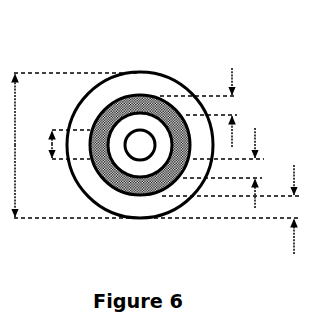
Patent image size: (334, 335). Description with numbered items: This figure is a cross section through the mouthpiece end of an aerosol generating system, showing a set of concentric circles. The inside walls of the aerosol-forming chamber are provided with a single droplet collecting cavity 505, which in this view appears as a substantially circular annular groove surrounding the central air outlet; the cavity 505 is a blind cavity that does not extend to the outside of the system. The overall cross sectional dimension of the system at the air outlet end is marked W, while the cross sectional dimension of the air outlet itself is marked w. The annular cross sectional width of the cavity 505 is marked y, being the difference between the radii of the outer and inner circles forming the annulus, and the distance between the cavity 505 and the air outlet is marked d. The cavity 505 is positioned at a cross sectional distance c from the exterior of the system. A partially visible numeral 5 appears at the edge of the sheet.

The droplet collecting cavity 505 is at (138, 96).
The partially visible reference numeral at page edge 5 is at (4, 56).
The cross sectional dimension of the aerosol generating system W is at (150, 145).
The cross sectional dimension of the air outlet w is at (61, 143).
The annular cross sectional width y is at (207, 107).
The depth d is at (233, 168).
The cross sectional distance c is at (238, 209).